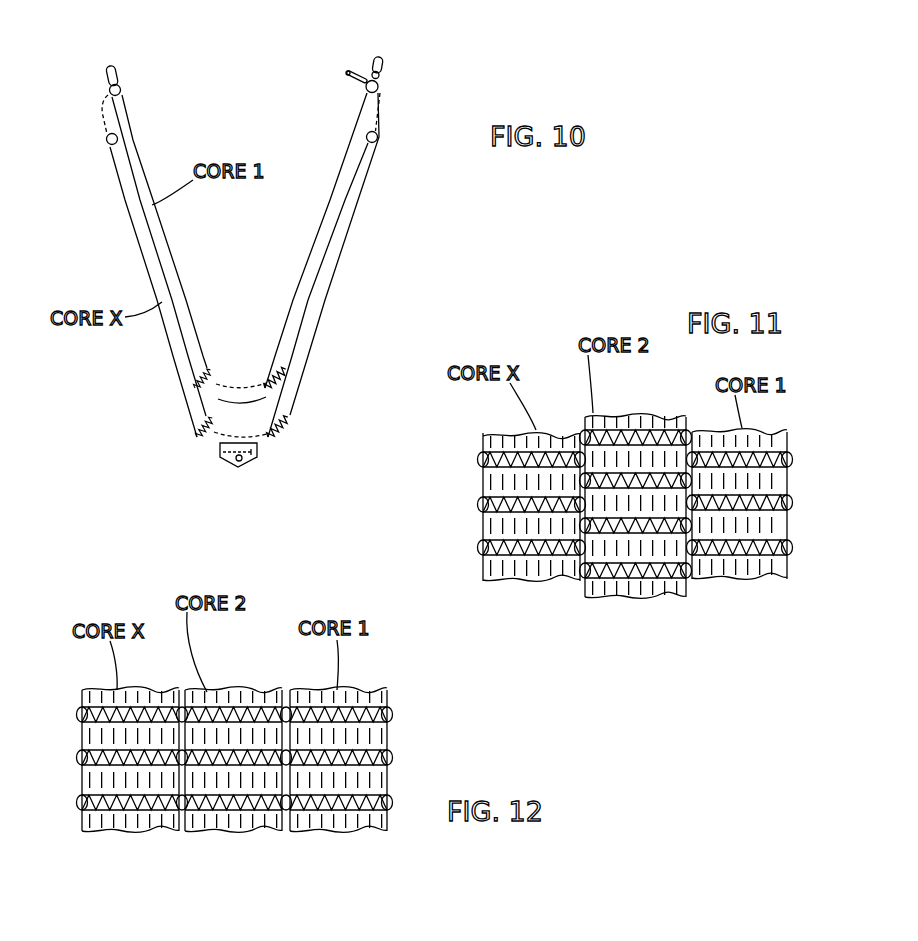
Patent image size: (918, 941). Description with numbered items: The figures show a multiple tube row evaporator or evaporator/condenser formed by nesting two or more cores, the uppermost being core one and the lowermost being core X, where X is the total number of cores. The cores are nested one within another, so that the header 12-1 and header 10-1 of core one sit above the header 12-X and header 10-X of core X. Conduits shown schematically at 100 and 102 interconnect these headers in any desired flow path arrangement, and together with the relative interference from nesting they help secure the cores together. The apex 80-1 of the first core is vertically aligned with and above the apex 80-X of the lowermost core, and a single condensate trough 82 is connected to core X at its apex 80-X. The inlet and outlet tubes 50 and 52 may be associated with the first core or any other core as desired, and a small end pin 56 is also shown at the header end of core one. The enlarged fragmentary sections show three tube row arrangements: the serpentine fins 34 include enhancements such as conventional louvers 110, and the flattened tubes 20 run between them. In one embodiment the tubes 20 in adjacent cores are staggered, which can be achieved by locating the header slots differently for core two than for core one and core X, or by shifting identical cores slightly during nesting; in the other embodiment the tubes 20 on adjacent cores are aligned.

In FIG. 10, the header of core 1 12-1 is at (109, 91).
In FIG. 10, the end pin 56 is at (112, 67).
In FIG. 10, the conduit 102 is at (103, 112).
In FIG. 10, the header of core X 12-X is at (106, 142).
In FIG. 10, the outlet tube 52 is at (346, 73).
In FIG. 10, the inlet tube 50 is at (380, 58).
In FIG. 10, the header of core 1 10-1 is at (379, 89).
In FIG. 10, the conduit 100 is at (382, 114).
In FIG. 10, the header of core X 10-X is at (378, 138).
In FIG. 10, the apex of core 1 80-1 is at (229, 402).
In FIG. 10, the apex of core X 80-X is at (253, 458).
In FIG. 10, the condensate trough 82 is at (222, 471).
In FIG. 11, the flattened tubes 20 is at (485, 550).
In FIG. 12, the flattened tubes 20 is at (82, 757).
In FIG. 11, the serpentine fins 34 is at (483, 480).
In FIG. 12, the serpentine fins 34 is at (87, 785).
In FIG. 11, the louvers 110 is at (744, 563).